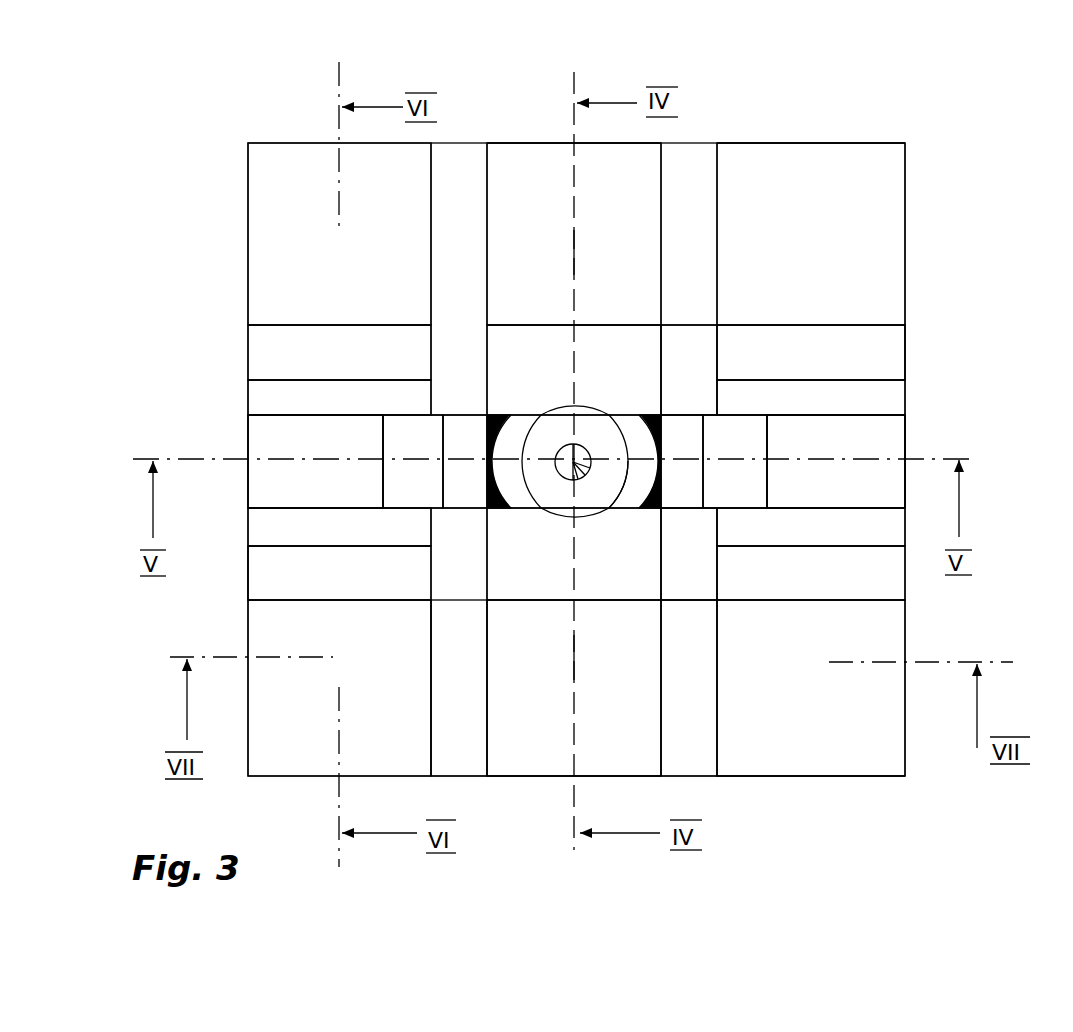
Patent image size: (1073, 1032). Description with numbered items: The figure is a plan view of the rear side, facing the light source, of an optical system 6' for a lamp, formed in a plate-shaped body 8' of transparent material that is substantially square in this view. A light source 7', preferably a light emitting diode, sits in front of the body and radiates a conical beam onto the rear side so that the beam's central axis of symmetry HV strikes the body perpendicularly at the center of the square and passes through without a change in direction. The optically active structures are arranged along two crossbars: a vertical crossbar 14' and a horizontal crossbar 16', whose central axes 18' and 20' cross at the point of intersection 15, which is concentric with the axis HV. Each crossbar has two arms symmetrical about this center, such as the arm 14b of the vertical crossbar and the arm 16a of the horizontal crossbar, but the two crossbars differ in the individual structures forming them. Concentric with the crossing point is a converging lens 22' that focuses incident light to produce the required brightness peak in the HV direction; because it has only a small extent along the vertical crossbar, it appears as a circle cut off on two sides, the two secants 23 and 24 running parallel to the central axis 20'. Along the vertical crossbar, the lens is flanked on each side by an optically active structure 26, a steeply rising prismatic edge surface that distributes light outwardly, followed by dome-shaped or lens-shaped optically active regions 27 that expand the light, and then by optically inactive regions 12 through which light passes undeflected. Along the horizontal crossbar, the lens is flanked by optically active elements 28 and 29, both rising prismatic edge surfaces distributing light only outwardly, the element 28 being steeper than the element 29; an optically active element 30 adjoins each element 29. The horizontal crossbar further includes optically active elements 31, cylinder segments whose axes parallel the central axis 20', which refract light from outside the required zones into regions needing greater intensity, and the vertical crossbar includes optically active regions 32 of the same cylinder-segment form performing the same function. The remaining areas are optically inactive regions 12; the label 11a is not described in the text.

The optically inactive region 12 is at (310, 222).
The optically active element 31 is at (358, 365).
The optically active region 27 is at (527, 365).
The optically active structure 26 is at (652, 400).
The optically active region 32 is at (477, 758).
The optically active element 30 is at (367, 498).
The central axis 20' is at (576, 461).
The optically active element 29 is at (420, 495).
The optically active element 28 is at (473, 497).
The secant 23 is at (553, 413).
The secant 24 is at (555, 509).
The converging lens 22' is at (616, 501).
The light source 7' is at (566, 454).
The point of intersection 15 is at (587, 470).
The central axis of symmetry HV is at (595, 459).
The arm 14b is at (523, 167).
The central axis 18' is at (609, 455).
The bottom edge 11a is at (607, 763).
The plate-shaped body 8' is at (811, 797).
The optical system 6' is at (811, 94).
The crossbar 14' is at (526, 853).
The arm 16a is at (886, 363).
The crossbar 16' is at (984, 456).